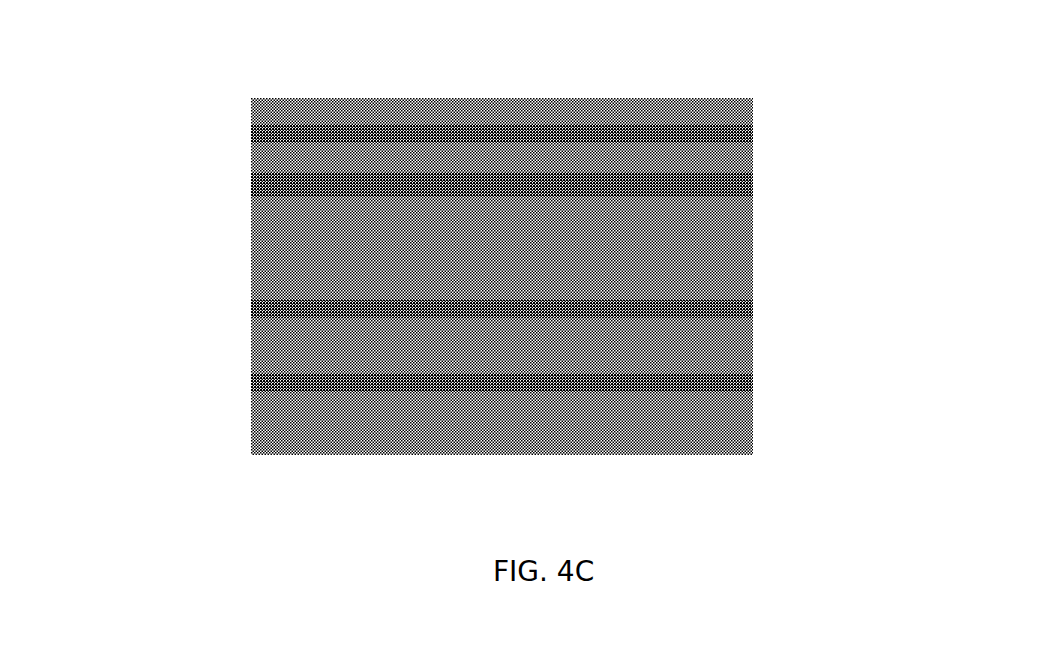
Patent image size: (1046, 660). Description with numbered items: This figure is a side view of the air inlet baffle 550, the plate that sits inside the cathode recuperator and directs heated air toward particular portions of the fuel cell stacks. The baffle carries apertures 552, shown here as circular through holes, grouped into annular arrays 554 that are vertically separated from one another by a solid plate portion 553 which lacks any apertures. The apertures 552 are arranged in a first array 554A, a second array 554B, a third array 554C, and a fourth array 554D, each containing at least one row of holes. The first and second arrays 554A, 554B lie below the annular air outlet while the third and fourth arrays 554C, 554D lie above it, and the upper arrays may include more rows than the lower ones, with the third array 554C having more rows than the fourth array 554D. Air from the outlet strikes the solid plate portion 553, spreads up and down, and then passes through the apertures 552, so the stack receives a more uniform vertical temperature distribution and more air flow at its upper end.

The air inlet baffle 550 is at (491, 94).
The apertures 552 is at (622, 127).
The solid plate portion 553 is at (724, 246).
The arrays 554 is at (117, 110).
The first array 554A is at (220, 360).
The second array 554B is at (220, 292).
The third array 554C is at (220, 158).
The fourth array 554D is at (220, 110).